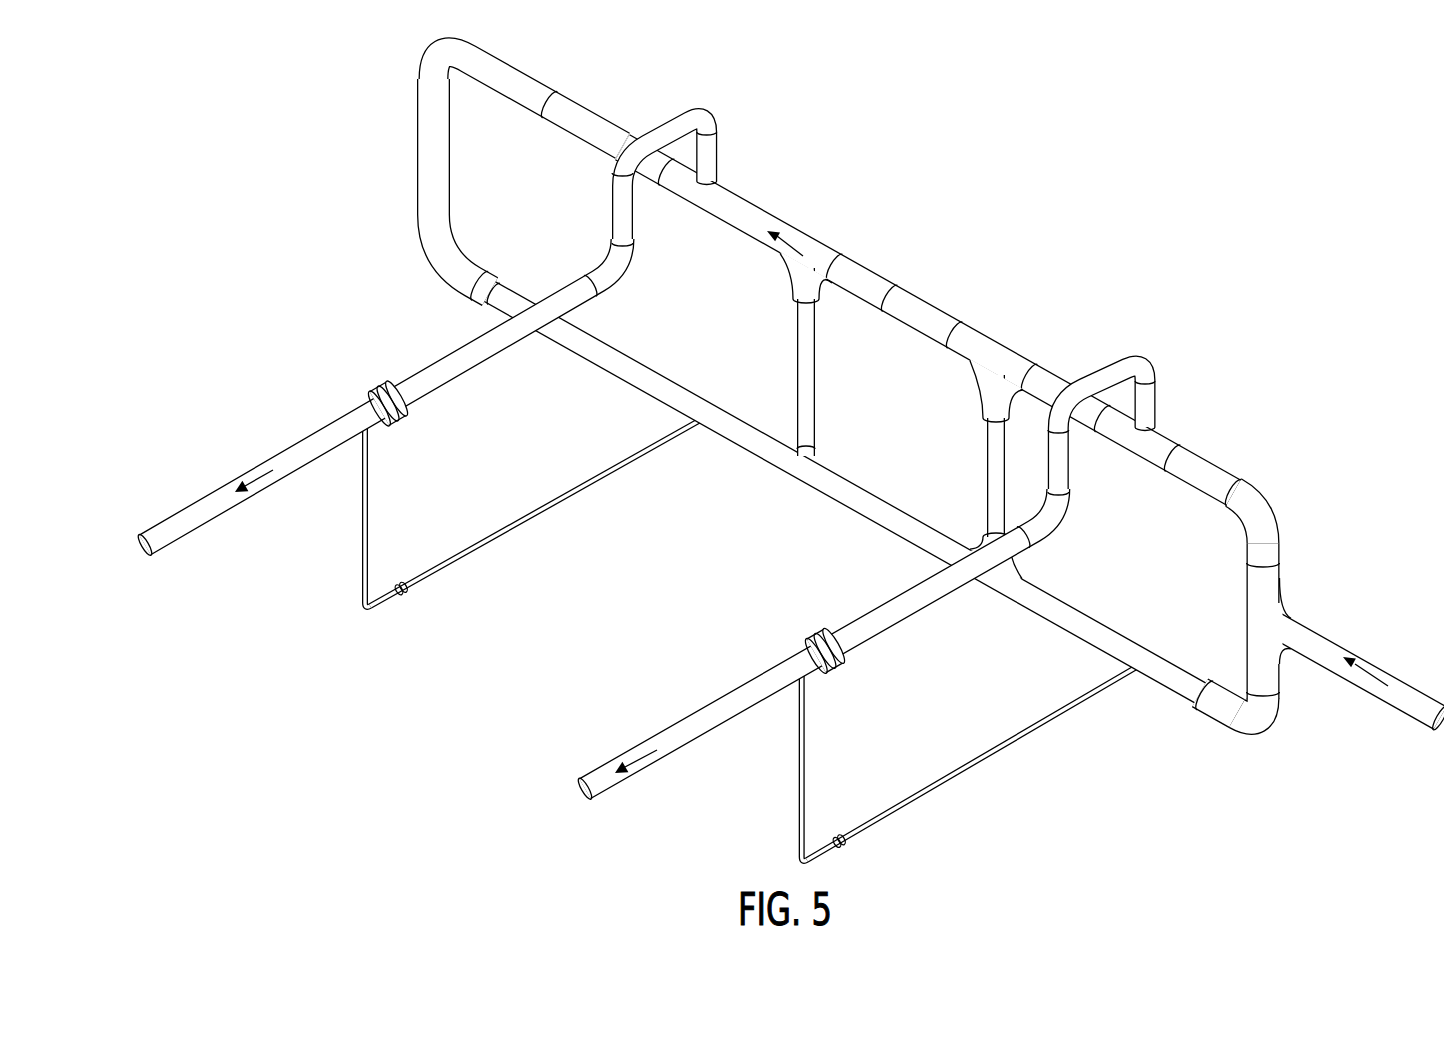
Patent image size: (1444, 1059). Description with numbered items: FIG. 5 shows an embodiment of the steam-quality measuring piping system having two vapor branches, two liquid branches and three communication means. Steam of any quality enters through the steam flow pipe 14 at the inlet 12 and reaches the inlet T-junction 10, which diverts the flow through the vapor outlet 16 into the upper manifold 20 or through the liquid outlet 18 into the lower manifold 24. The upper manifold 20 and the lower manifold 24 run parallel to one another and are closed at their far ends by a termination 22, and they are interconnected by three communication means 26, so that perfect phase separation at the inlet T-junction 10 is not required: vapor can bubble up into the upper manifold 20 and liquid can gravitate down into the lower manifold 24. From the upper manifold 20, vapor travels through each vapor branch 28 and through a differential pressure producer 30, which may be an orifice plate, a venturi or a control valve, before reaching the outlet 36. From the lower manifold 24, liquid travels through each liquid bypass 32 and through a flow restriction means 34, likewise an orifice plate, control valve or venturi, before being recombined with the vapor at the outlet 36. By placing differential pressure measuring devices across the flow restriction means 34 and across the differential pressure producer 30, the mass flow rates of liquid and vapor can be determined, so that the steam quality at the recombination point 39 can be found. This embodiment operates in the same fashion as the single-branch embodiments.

The inlet T-junction 10 is at (1307, 573).
The inlet 12 is at (1298, 649).
The steam flow pipe 14 is at (1353, 658).
The vapor outlet 16 is at (1293, 509).
The liquid outlet 18 is at (1249, 732).
The upper manifold 20 is at (955, 326).
The termination 22 is at (528, 91).
The lower manifold 24 is at (853, 496).
The communication means 26 is at (679, 330).
The vapor branch 28 is at (900, 278).
The differential pressure producer 30 is at (652, 545).
The liquid bypass 32 is at (755, 639).
The flow restriction means 34 is at (650, 739).
The outlet 36 is at (602, 529).
The recombination point 39 is at (536, 643).